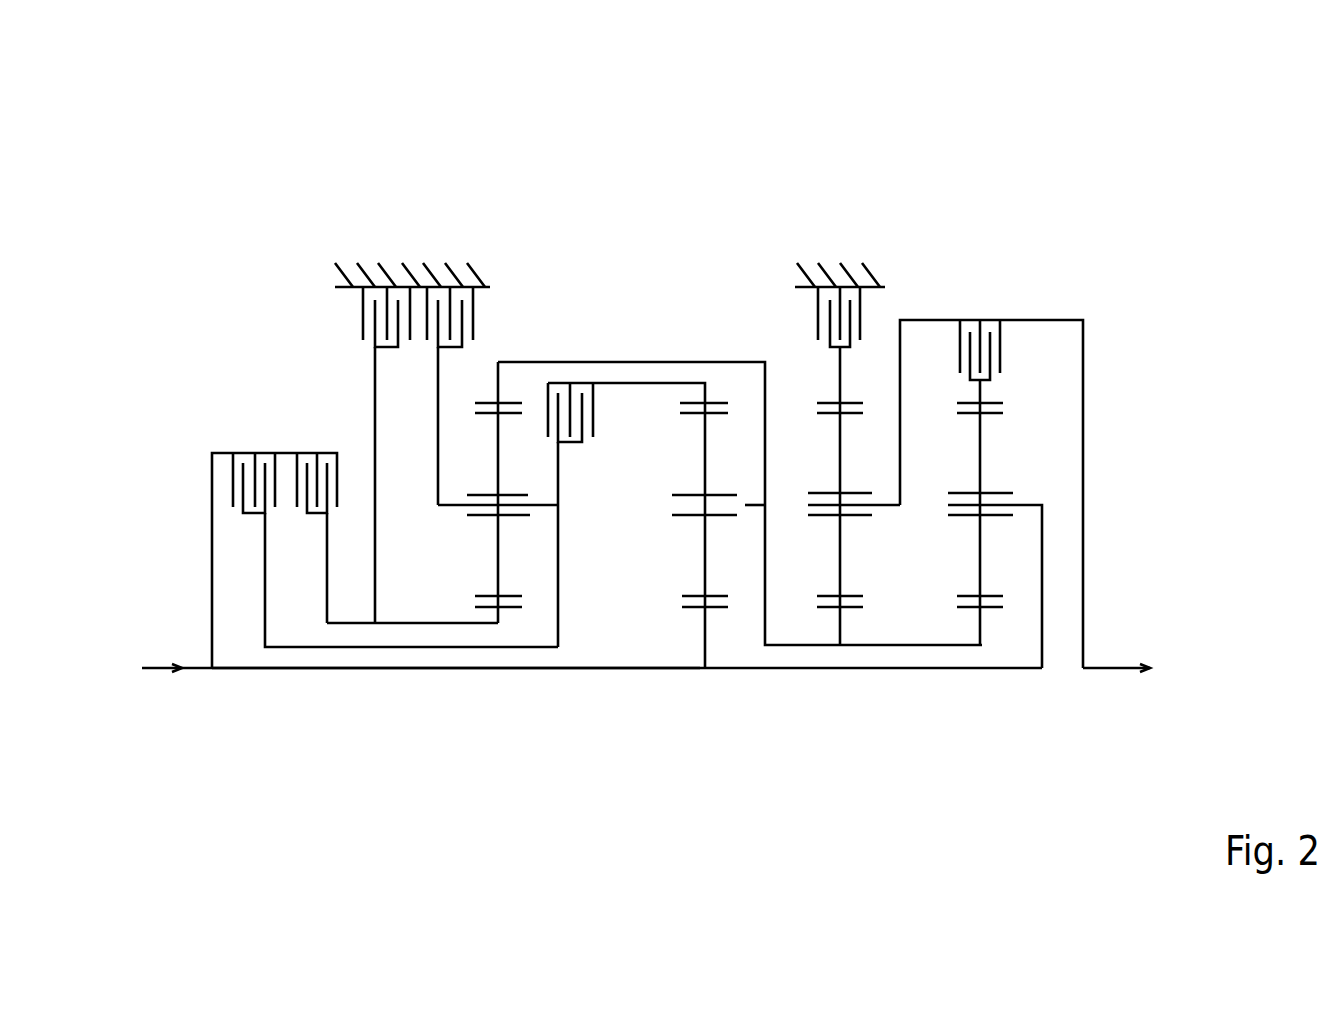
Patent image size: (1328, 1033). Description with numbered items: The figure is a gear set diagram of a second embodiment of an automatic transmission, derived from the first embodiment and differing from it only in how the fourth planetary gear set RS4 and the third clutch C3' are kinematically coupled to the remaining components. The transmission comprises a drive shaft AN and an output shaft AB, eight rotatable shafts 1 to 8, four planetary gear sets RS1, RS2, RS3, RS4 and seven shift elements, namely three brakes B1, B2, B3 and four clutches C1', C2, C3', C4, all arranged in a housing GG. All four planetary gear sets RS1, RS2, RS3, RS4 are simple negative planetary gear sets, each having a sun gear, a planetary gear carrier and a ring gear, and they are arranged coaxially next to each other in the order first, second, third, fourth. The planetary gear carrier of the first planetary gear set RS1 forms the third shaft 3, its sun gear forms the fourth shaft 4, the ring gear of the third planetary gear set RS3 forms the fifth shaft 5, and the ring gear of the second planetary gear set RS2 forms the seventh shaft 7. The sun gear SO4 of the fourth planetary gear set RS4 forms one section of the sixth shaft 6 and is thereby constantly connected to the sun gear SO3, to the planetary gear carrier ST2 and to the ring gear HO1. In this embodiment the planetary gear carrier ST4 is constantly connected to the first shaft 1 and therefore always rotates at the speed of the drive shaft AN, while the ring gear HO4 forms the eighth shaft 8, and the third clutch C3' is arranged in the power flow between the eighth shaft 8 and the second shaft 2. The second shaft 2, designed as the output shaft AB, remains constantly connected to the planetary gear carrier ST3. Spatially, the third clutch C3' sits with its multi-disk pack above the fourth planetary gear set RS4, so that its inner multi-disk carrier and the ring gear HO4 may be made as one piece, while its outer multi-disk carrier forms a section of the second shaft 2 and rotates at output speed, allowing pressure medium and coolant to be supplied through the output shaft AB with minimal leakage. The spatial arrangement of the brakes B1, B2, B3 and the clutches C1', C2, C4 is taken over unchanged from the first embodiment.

The first shaft 1 is at (318, 670).
The second shaft 2 is at (1083, 395).
The third shaft 3 is at (452, 507).
The fourth shaft 4 is at (407, 625).
The fifth shaft 5 is at (837, 373).
The sixth shaft 6 is at (545, 362).
The seventh shaft 7 is at (627, 383).
The eighth shaft 8 is at (983, 390).
The drive shaft AN is at (592, 656).
The output shaft AB is at (1116, 656).
The housing GG is at (422, 277).
The first brake B1 is at (478, 313).
The second brake B2 is at (353, 312).
The third brake B3 is at (870, 312).
The first clutch C1' is at (585, 596).
The second clutch C2 is at (252, 447).
The third clutch C3' is at (988, 245).
The fourth clutch C4 is at (315, 445).
The first planetary gear set RS1 is at (518, 530).
The second planetary gear set RS2 is at (668, 532).
The third planetary gear set RS3 is at (810, 528).
The fourth planetary gear set RS4 is at (952, 528).
The ring gear of the first planetary gear set HO1 is at (482, 402).
The ring gear of the fourth planetary gear set HO4 is at (980, 408).
The sun gear of the third planetary gear set SO3 is at (847, 610).
The sun gear of the fourth planetary gear set SO4 is at (992, 610).
The planetary gear carrier of the second planetary gear set ST2 is at (742, 505).
The planetary gear carrier of the third planetary gear set ST3 is at (885, 505).
The planetary gear carrier of the fourth planetary gear set ST4 is at (1025, 498).